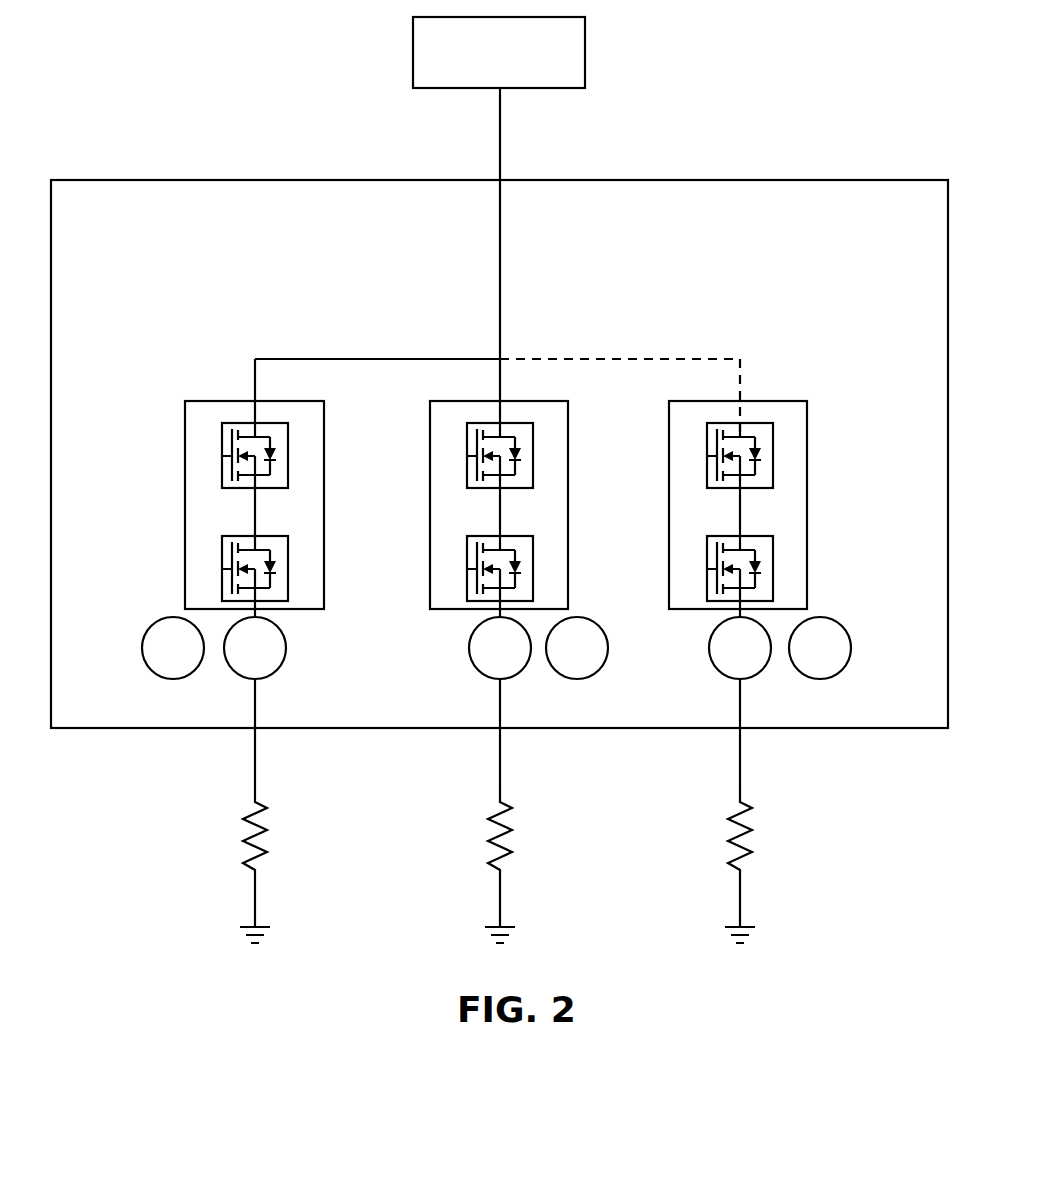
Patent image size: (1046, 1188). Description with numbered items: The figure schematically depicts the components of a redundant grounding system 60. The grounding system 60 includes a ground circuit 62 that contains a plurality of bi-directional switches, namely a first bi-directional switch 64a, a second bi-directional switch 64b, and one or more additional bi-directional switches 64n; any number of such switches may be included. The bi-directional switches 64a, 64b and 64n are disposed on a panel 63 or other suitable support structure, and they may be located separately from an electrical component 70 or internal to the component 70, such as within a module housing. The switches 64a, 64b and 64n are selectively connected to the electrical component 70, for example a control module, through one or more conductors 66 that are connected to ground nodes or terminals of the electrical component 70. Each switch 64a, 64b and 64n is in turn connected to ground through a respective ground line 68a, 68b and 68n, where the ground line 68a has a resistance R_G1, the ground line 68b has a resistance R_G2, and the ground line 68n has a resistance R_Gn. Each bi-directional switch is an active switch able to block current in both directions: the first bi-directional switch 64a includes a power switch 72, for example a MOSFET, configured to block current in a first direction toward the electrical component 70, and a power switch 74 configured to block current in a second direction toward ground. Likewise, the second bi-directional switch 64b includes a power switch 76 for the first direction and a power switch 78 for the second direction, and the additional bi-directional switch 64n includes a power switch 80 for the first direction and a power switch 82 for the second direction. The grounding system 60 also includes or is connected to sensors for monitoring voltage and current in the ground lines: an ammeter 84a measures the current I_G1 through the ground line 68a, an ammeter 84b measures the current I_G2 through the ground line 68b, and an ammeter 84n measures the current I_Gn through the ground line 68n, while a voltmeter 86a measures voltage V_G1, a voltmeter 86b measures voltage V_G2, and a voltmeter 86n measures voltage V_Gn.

The redundant grounding system 60 is at (166, 130).
The ground circuit 62 is at (882, 214).
The panel 63 is at (785, 180).
The first bi-directional switch 64a is at (205, 401).
The second bi-directional switch 64b is at (518, 401).
The additional bi-directional switch 64n is at (775, 401).
The conductor 66 is at (500, 243).
The ground line 68a is at (255, 796).
The ground line 68b is at (500, 796).
The ground line 68n is at (740, 796).
The electrical component 70 is at (413, 52).
The power switch 72 is at (224, 455).
The power switch 74 is at (288, 568).
The power switch 76 is at (469, 455).
The power switch 78 is at (533, 568).
The power switch 80 is at (708, 455).
The power switch 82 is at (773, 568).
The ammeter 84a is at (286, 648).
The ammeter 84b is at (469, 650).
The ammeter 84n is at (707, 652).
The voltmeter 86a is at (143, 648).
The voltmeter 86b is at (608, 648).
The voltmeter 86n is at (851, 648).